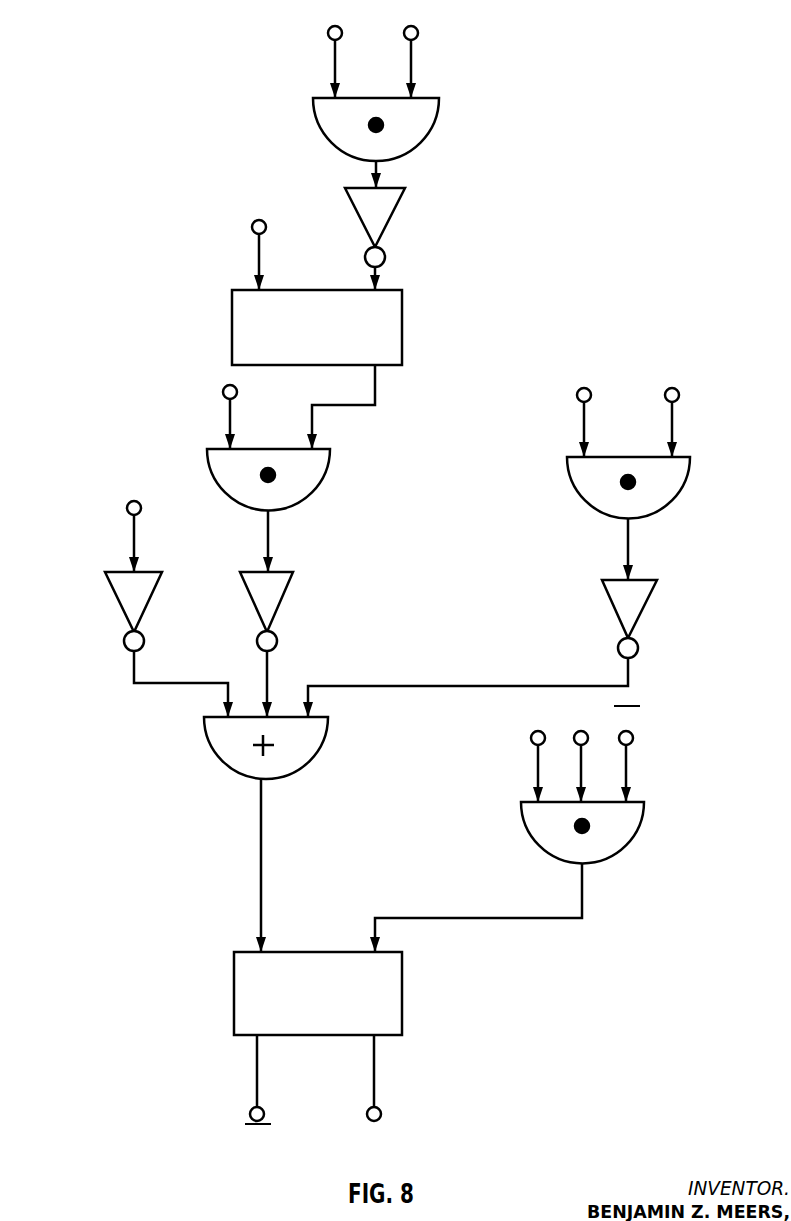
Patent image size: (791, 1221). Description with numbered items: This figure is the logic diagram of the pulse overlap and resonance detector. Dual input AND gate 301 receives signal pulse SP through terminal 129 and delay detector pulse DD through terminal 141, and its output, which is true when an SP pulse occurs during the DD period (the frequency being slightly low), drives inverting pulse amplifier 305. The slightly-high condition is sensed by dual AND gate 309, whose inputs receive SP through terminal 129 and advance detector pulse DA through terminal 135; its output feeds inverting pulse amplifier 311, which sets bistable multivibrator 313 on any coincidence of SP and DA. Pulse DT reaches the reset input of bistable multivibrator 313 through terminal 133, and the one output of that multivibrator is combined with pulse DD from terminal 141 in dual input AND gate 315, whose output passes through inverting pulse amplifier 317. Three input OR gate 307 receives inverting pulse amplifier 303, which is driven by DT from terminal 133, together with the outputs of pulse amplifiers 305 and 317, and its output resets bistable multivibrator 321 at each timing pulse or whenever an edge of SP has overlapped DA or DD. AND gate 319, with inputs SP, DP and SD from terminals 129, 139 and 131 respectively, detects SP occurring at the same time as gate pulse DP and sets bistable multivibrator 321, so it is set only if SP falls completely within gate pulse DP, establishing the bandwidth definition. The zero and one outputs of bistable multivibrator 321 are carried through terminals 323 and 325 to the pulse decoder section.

The terminal 129 is at (328, 34).
The terminal 135 is at (419, 34).
The terminal 133 is at (252, 228).
The terminal 141 is at (223, 393).
The terminal 139 is at (588, 733).
The terminal 131 is at (633, 739).
The dual input AND gate 301 is at (670, 480).
The inverting pulse amplifier 303 is at (127, 601).
The inverting pulse amplifier 305 is at (632, 606).
The three input OR gate 307 is at (233, 753).
The dual AND gate 309 is at (423, 120).
The inverting pulse amplifier 311 is at (383, 203).
The bistable multivibrator 313 is at (384, 320).
The dual input AND gate 315 is at (229, 468).
The inverting pulse amplifier 317 is at (272, 593).
The AND gate 319 is at (617, 829).
The bistable multivibrator 321 is at (385, 985).
The terminal 323 is at (249, 1115).
The terminal 325 is at (382, 1114).